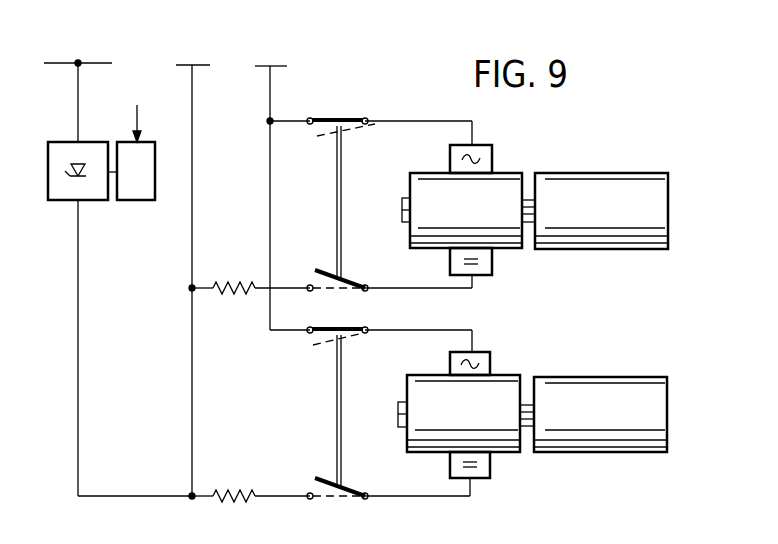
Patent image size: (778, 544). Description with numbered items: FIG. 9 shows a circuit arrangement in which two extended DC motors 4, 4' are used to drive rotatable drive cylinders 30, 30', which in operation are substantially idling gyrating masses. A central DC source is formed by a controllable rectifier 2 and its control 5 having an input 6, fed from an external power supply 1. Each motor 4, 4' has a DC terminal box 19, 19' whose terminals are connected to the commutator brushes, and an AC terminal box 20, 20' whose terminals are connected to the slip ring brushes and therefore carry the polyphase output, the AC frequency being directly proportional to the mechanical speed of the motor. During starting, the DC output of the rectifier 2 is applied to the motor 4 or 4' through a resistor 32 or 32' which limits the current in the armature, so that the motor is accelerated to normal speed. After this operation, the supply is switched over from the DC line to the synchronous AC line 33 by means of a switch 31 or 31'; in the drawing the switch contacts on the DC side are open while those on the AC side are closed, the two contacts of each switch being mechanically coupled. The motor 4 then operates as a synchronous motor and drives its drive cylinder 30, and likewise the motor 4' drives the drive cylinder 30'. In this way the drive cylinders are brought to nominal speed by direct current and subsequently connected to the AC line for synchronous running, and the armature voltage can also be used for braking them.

The external power supply 1 is at (62, 65).
The controllable rectifier 2 is at (48, 177).
The control 5 is at (137, 200).
The input 6 is at (146, 122).
The motor 4 is at (448, 425).
The motor 4' is at (450, 219).
The terminal box 19 is at (497, 474).
The terminal box 19' is at (499, 271).
The terminal box 20 is at (500, 353).
The terminal box 20' is at (499, 150).
The drive cylinder 30 is at (600, 390).
The drive cylinder 30' is at (601, 187).
The switch 31 is at (313, 411).
The switch 31' is at (316, 203).
The resistor 32 is at (251, 475).
The resistor 32' is at (251, 263).
The synchronous AC line 33 is at (272, 97).